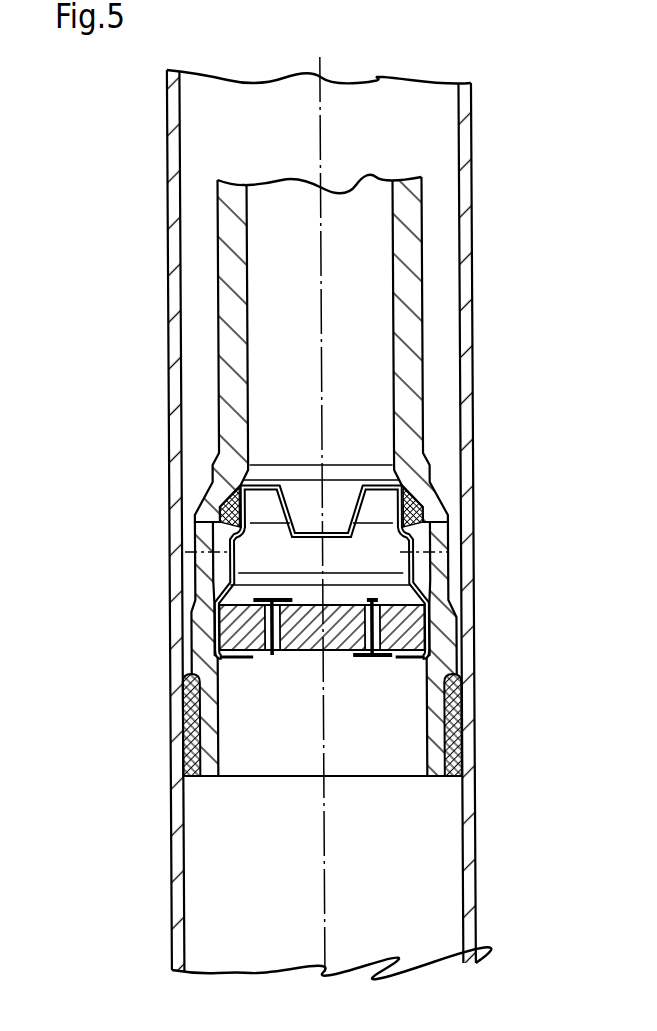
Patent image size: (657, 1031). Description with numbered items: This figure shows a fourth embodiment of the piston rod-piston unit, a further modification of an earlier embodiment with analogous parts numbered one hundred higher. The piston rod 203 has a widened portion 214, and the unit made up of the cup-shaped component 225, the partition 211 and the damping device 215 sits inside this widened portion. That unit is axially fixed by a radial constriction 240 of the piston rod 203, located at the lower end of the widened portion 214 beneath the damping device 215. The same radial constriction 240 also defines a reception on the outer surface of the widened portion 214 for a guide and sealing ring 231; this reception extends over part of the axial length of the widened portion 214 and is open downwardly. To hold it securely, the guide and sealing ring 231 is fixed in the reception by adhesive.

The piston rod 203 is at (230, 272).
The partition 211 is at (372, 485).
The widened portion 214 is at (436, 638).
The damping device 215 is at (228, 623).
The cup-shaped component 225 is at (412, 577).
The guide and sealing ring 231 is at (183, 718).
The radial constriction 240 is at (204, 700).